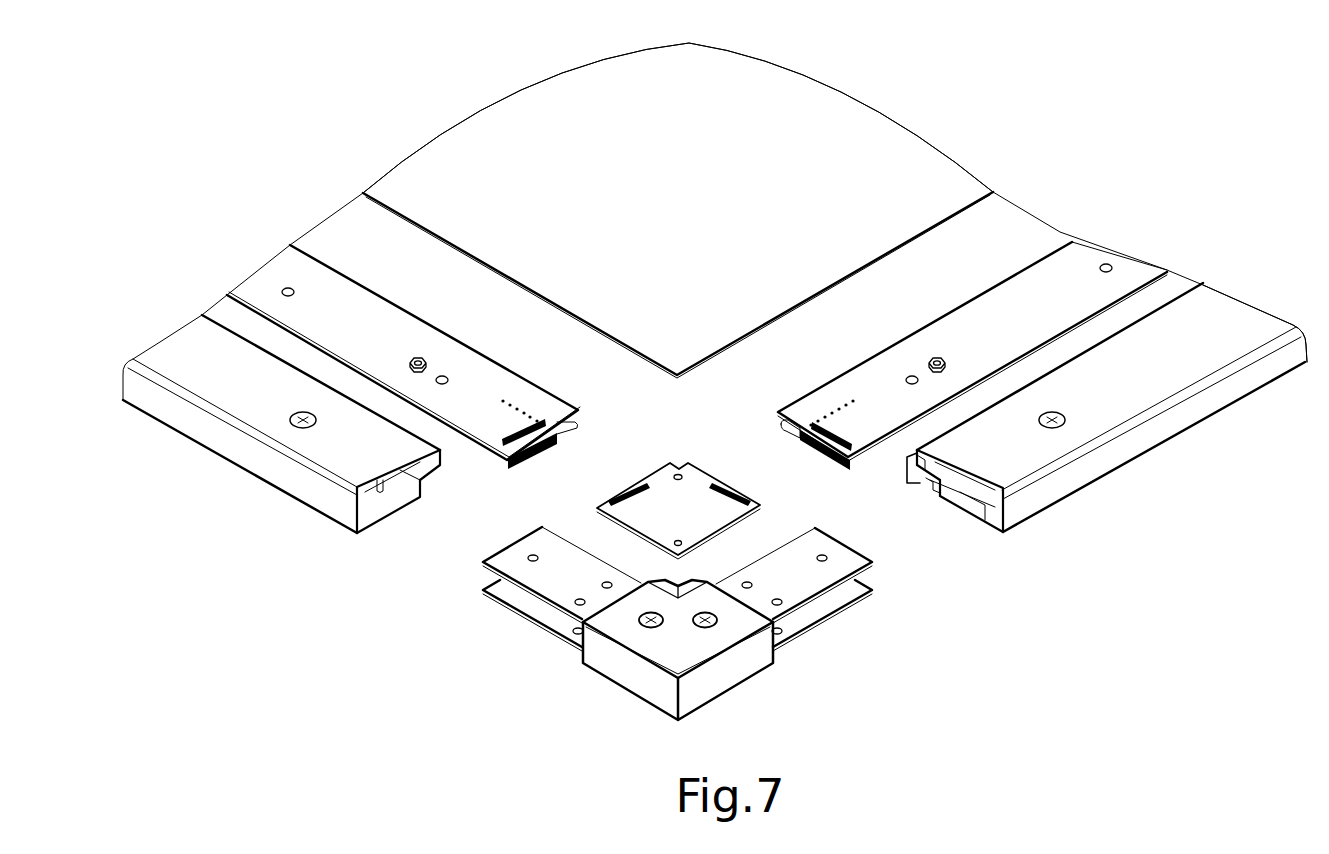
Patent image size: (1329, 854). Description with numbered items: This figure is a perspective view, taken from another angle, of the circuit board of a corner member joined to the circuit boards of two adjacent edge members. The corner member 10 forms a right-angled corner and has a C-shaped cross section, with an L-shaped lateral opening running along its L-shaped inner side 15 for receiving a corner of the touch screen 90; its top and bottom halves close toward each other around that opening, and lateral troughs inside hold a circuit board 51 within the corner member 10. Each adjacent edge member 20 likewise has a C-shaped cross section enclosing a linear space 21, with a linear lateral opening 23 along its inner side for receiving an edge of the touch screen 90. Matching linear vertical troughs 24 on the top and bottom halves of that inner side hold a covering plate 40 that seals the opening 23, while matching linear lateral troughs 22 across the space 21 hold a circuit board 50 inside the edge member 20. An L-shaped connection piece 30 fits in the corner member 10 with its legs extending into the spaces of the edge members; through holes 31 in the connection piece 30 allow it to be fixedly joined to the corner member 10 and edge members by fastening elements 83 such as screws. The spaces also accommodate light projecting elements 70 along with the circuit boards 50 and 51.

The corner member 10 is at (700, 697).
The L-shaped inner side 15 is at (687, 580).
The edge member 20 is at (1068, 487).
The linear space 21 is at (982, 512).
The linear lateral trough 22 is at (995, 528).
The linear lateral opening 23 is at (938, 495).
The linear vertical trough 24 is at (920, 478).
The connection piece 30 is at (803, 625).
The through hole 31 is at (824, 555).
The covering plate 40 is at (906, 470).
The circuit board 50 is at (813, 390).
The circuit board 51 is at (702, 478).
The light projecting element 70 is at (788, 432).
The fastening element 83 is at (1065, 419).
The touch screen 90 is at (714, 349).